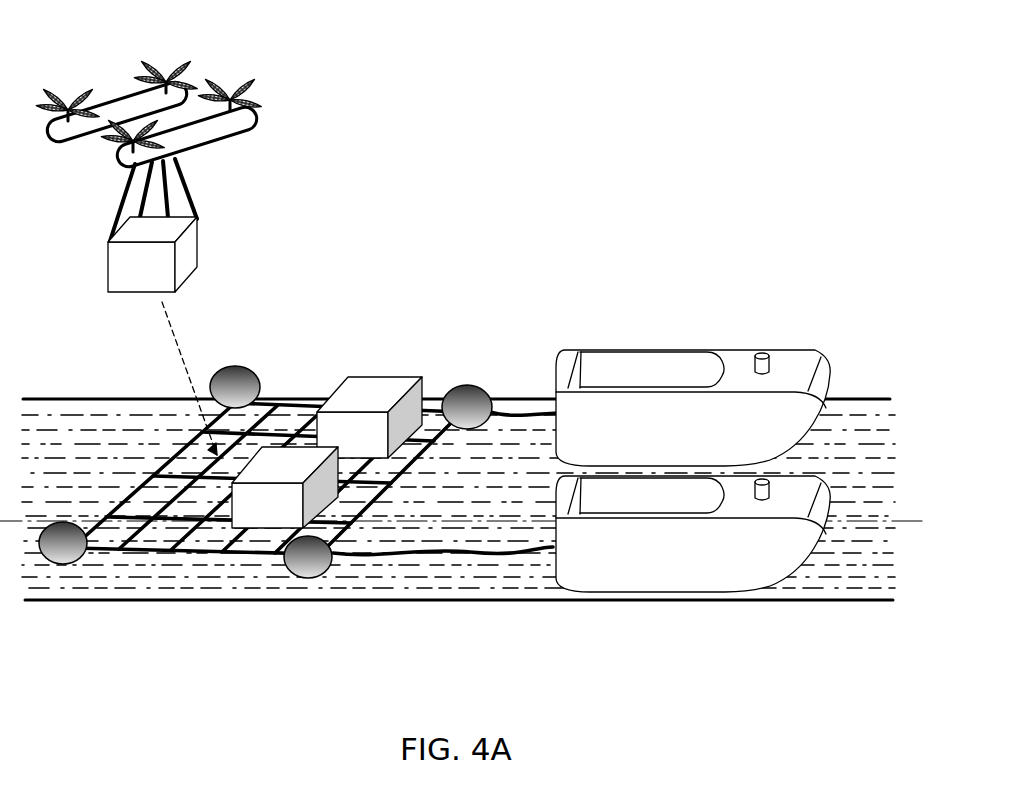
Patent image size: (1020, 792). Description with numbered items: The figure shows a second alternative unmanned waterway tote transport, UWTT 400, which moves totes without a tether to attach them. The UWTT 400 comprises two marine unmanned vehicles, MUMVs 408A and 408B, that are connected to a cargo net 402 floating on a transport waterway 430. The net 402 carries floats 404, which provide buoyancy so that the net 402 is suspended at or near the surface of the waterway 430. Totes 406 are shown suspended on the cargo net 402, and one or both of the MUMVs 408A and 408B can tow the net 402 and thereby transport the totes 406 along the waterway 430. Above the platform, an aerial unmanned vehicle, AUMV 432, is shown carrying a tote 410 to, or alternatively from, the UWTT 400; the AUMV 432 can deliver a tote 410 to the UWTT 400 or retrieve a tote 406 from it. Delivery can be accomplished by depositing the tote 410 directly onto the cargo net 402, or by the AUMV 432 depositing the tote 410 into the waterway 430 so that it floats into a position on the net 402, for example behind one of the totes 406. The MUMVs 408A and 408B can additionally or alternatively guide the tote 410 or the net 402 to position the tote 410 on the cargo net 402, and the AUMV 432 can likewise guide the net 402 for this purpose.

The UWTT 400 is at (786, 306).
The net 402 is at (145, 555).
The floats 404 is at (237, 366).
The totes 406 is at (384, 408).
The MUMV 408A is at (700, 435).
The MUMV 408B is at (700, 564).
The tote 410 is at (200, 243).
The transport waterway 430 is at (515, 615).
The AUMV 432 is at (117, 93).